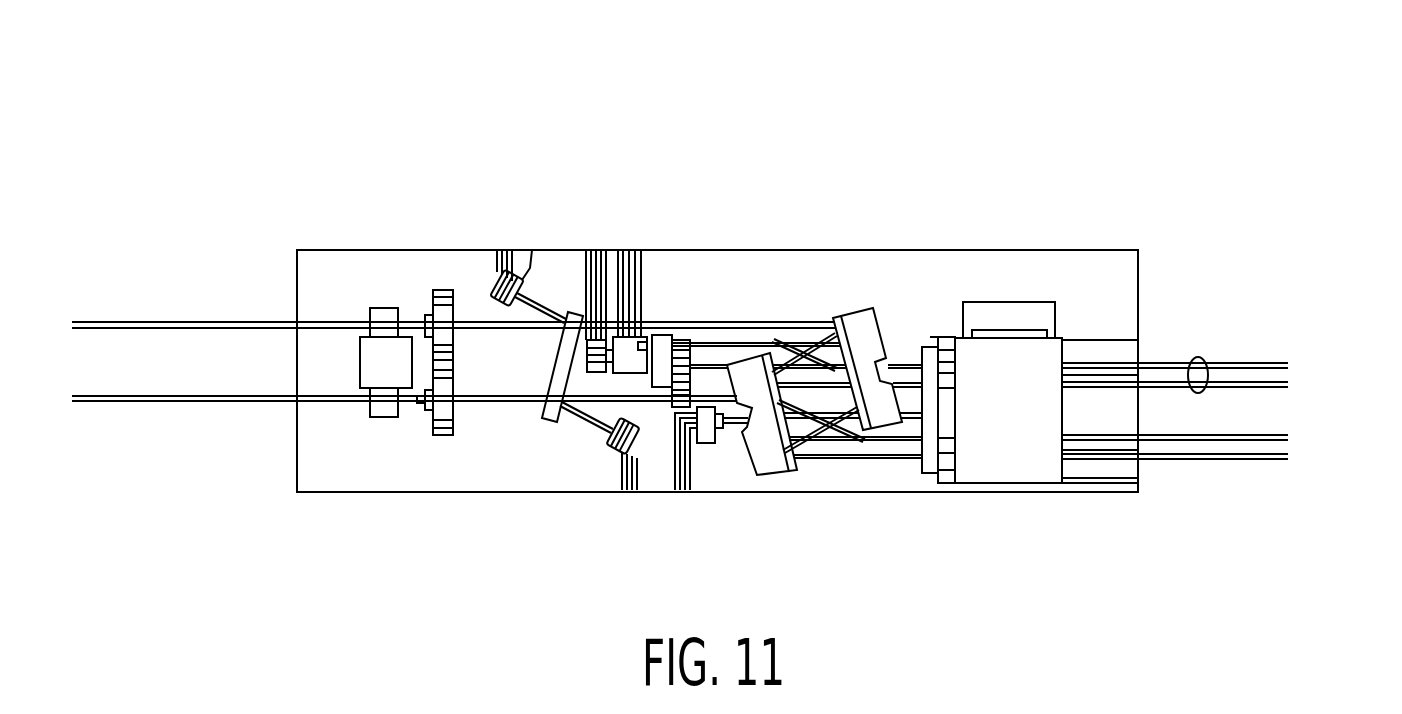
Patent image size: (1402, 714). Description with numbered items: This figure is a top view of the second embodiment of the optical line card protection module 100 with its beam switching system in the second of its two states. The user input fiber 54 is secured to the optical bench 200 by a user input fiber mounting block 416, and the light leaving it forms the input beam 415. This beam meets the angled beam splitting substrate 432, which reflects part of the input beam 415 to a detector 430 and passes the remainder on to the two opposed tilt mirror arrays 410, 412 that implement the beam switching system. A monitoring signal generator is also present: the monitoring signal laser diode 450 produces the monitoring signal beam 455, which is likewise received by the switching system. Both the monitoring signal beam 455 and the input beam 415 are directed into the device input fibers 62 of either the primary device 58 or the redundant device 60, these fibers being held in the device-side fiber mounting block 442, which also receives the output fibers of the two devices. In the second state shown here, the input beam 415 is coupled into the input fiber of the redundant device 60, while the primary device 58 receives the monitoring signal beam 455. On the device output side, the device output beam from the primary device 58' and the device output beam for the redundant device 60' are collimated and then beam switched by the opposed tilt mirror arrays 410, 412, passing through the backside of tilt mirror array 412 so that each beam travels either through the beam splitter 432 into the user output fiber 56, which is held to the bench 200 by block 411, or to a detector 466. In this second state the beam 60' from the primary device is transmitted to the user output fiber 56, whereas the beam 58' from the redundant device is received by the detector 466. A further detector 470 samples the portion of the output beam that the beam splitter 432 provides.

The optical line card protection module 100 is at (1126, 190).
The user input fiber 54 is at (233, 322).
The user output fiber 56 is at (233, 402).
The primary device 58 is at (1227, 360).
The redundant device 60 is at (1232, 454).
The device output beam from the primary device 58' is at (855, 486).
The device output beam for the redundant device 60' is at (858, 496).
The device input fibers 62 is at (1198, 357).
The optical bench 200 is at (503, 484).
The tilt mirror array 410 is at (860, 318).
The block 411 is at (372, 418).
The tilt mirror array 412 is at (770, 470).
The input beam 415 is at (462, 300).
The user input fiber mounting block 416 is at (378, 308).
The detector 430 is at (530, 268).
The angled beam splitting substrate 432 is at (560, 420).
The device-side fiber mounting block 442 is at (1008, 478).
The monitoring signal laser diode 450 is at (641, 337).
The monitoring signal beam 455 is at (778, 352).
The detector 466 is at (704, 443).
The detector 470 is at (620, 450).